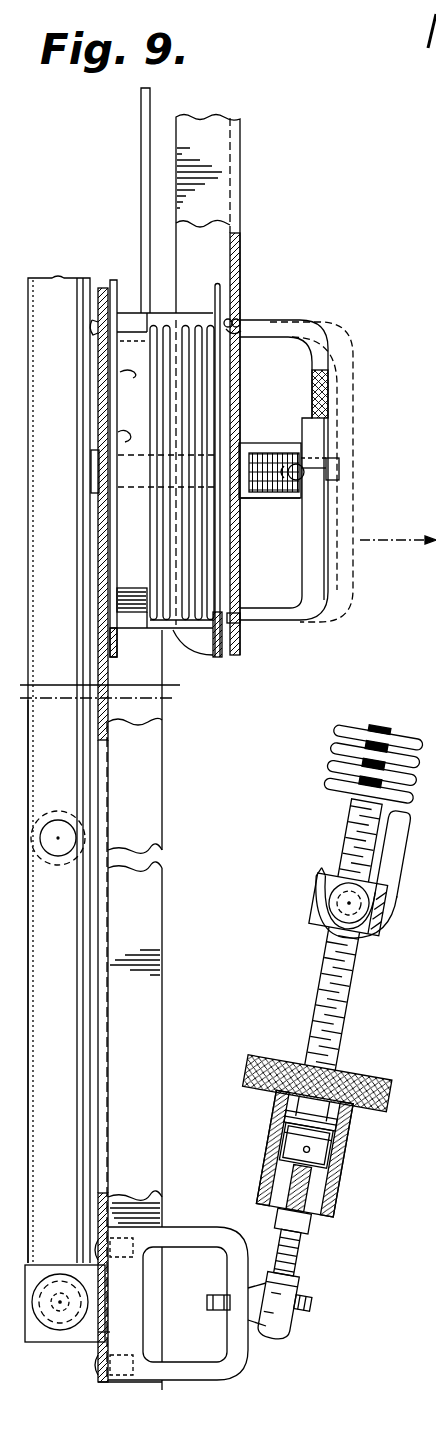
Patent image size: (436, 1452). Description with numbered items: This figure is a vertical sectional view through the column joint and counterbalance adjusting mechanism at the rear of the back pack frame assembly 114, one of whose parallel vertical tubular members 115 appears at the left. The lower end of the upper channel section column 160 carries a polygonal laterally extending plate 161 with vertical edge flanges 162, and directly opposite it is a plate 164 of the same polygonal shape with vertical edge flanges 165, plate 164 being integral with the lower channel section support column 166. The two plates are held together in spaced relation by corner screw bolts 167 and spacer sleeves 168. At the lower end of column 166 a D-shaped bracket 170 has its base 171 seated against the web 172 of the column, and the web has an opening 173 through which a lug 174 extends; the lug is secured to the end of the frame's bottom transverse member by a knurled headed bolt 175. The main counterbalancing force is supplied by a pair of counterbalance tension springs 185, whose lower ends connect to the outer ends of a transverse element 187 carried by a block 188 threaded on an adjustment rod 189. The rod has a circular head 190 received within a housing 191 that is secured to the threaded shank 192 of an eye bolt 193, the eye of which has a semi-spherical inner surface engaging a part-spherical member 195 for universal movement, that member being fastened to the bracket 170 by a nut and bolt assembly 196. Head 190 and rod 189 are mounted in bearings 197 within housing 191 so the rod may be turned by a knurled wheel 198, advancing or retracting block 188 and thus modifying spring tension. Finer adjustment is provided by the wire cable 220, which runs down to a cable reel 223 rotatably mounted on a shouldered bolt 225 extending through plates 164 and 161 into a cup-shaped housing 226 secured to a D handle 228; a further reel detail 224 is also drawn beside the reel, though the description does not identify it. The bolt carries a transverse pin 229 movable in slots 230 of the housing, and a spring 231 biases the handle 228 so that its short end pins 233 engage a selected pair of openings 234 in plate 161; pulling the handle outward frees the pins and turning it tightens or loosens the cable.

The back pack frame assembly 114 is at (262, 265).
The vertical tubular members 115 is at (65, 927).
The channel section column 160 is at (240, 125).
The polygonal laterally extending plate 161 is at (241, 583).
The vertical edge flanges 162 is at (206, 157).
The plate 164 is at (90, 601).
The vertical edge flanges 165 is at (128, 300).
The lower channel section support column 166 is at (162, 890).
The corner screw bolts 167 is at (76, 283).
The spacer sleeves 168 is at (200, 313).
The D-shaped bracket 170 is at (193, 1240).
The base 171 is at (125, 1285).
The web 172 is at (133, 1195).
The opening 173 is at (110, 1332).
The lug 174 is at (43, 1267).
The knurled headed bolt 175 is at (62, 1320).
The counterbalance tension springs 185 is at (333, 752).
The transverse element 187 is at (345, 903).
The block 188 is at (398, 937).
The adjustment rod 189 is at (320, 987).
The circular head 190 is at (337, 1150).
The housing 191 is at (343, 1175).
The threaded shank 192 is at (307, 1247).
The eye bolt 193 is at (293, 1270).
The part-spherical member 195 is at (293, 1320).
The nut and bolt assembly 196 is at (220, 1317).
The bearings 197 is at (282, 1127).
The knurled wheel 198 is at (370, 1087).
The wire cable 220 is at (140, 97).
The cable reel 223 is at (134, 378).
The hook 224 is at (123, 437).
The shouldered bolt 225 is at (100, 470).
The cup-shaped housing 226 is at (267, 445).
The D handle 228 is at (320, 367).
The transverse pin 229 is at (340, 470).
The slots 230 is at (303, 462).
The spring 231 is at (268, 500).
The end pins 233 is at (242, 298).
The openings 234 is at (240, 333).